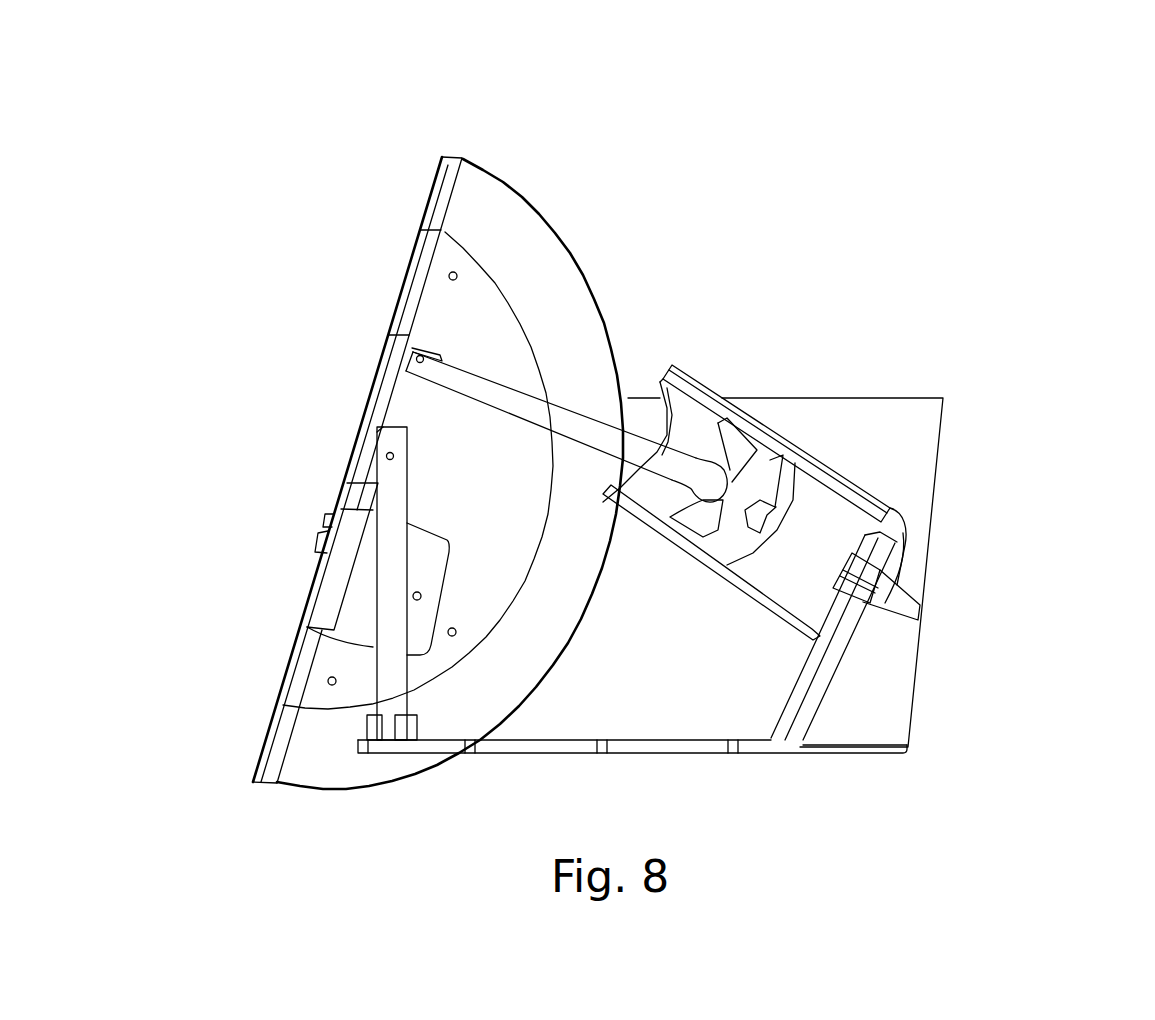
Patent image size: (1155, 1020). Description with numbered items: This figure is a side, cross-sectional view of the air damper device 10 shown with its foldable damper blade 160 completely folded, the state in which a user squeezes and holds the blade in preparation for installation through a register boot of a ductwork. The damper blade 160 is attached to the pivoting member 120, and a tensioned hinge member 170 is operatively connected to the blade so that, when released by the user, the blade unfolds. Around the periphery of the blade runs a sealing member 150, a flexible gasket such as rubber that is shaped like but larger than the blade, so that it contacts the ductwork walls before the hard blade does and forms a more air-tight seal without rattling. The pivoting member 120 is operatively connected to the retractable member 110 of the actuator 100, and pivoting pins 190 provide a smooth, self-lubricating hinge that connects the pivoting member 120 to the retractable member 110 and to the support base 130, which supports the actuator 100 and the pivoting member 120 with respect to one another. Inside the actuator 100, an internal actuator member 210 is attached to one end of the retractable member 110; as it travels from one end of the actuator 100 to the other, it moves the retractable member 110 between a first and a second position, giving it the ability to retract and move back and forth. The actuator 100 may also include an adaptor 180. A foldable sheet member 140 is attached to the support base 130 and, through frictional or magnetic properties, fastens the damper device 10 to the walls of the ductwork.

The air damper device 10 is at (836, 152).
The actuator 100 is at (818, 470).
The retractable member 110 is at (570, 420).
The pivoting member 120 is at (407, 397).
The support base 130 is at (687, 747).
The foldable sheet member 140 is at (912, 413).
The sealing member 150 is at (507, 217).
The foldable damper blade 160 is at (442, 307).
The tensioned hinge member 170 is at (355, 593).
The adaptor 180 is at (910, 597).
The pivoting pins 190 is at (415, 361).
The internal actuator member 210 is at (743, 503).